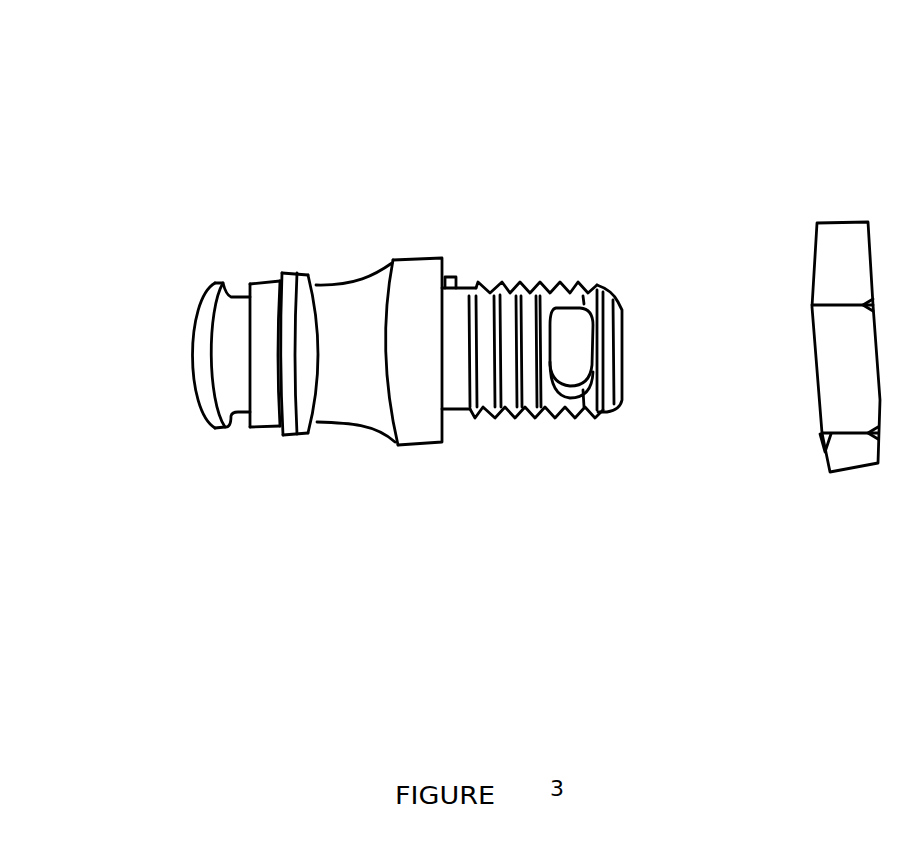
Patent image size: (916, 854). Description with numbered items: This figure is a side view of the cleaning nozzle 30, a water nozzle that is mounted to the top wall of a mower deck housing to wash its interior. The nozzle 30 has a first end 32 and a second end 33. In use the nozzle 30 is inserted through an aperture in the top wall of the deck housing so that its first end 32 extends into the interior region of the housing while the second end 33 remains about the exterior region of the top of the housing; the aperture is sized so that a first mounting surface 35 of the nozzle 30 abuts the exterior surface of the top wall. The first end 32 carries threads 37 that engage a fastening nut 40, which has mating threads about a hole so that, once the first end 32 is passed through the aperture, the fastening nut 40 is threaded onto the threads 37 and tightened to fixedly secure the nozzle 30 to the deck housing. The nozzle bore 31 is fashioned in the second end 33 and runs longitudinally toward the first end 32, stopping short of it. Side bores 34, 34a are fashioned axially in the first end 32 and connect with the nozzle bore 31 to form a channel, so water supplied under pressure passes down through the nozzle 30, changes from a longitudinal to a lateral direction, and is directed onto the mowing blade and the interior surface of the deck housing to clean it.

The cleaning nozzle 30 is at (352, 307).
The nozzle bore 31 is at (155, 382).
The first end 32 is at (619, 268).
The second end 33 is at (193, 268).
The side bore 34 is at (568, 360).
The side bore 34a is at (577, 275).
The first mounting surface 35 is at (447, 286).
The threads 37 is at (527, 400).
The fastening nut 40 is at (847, 422).